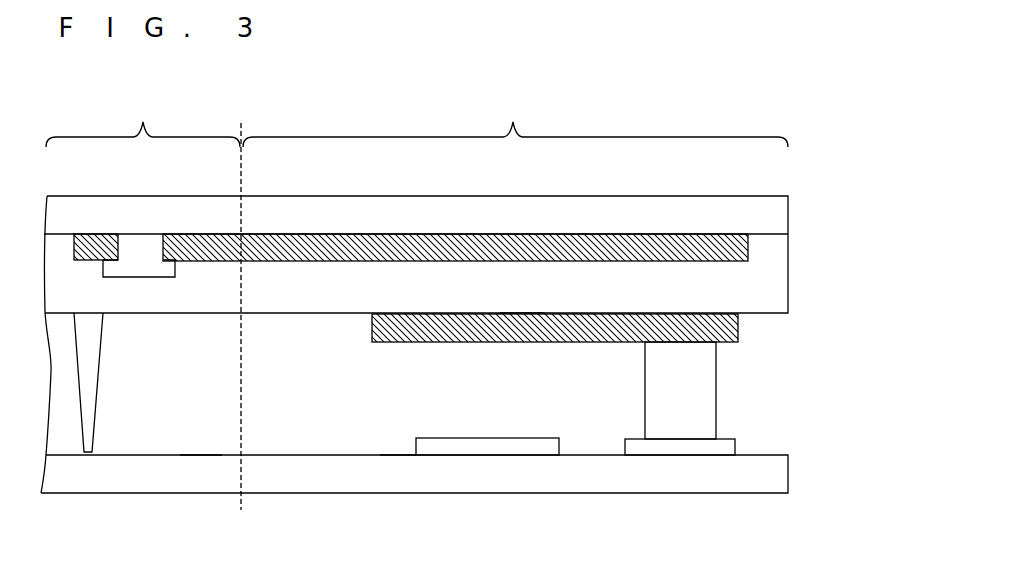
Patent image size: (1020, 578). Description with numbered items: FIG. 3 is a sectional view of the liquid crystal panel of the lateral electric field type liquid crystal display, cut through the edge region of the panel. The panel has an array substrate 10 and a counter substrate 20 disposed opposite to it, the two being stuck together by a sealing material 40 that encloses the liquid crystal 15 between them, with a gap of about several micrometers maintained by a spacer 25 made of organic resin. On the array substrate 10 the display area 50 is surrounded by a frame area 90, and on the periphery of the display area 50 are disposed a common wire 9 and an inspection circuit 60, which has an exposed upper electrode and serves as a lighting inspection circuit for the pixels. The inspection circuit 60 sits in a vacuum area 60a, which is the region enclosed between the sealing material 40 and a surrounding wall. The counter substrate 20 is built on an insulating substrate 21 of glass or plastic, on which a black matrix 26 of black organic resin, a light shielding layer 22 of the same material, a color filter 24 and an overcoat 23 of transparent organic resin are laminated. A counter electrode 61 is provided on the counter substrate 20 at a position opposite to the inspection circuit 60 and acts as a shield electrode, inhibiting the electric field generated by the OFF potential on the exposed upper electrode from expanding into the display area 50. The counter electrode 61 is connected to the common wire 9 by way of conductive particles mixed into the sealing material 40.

The common wire 9 is at (646, 449).
The array substrate 10 is at (553, 470).
The liquid crystal 15 is at (200, 440).
The counter substrate 20 is at (797, 197).
The insulating substrate 21 is at (715, 222).
The light shielding layer 22 is at (628, 250).
The overcoat 23 is at (522, 278).
The color filter 24 is at (138, 247).
The spacer 25 is at (90, 447).
The black matrix 26 is at (96, 245).
The sealing material 40 is at (698, 412).
The display area 50 is at (143, 122).
The inspection circuit 60 is at (490, 445).
The vacuum area 60a is at (412, 420).
The counter electrode 61 is at (738, 330).
The frame area 90 is at (513, 122).